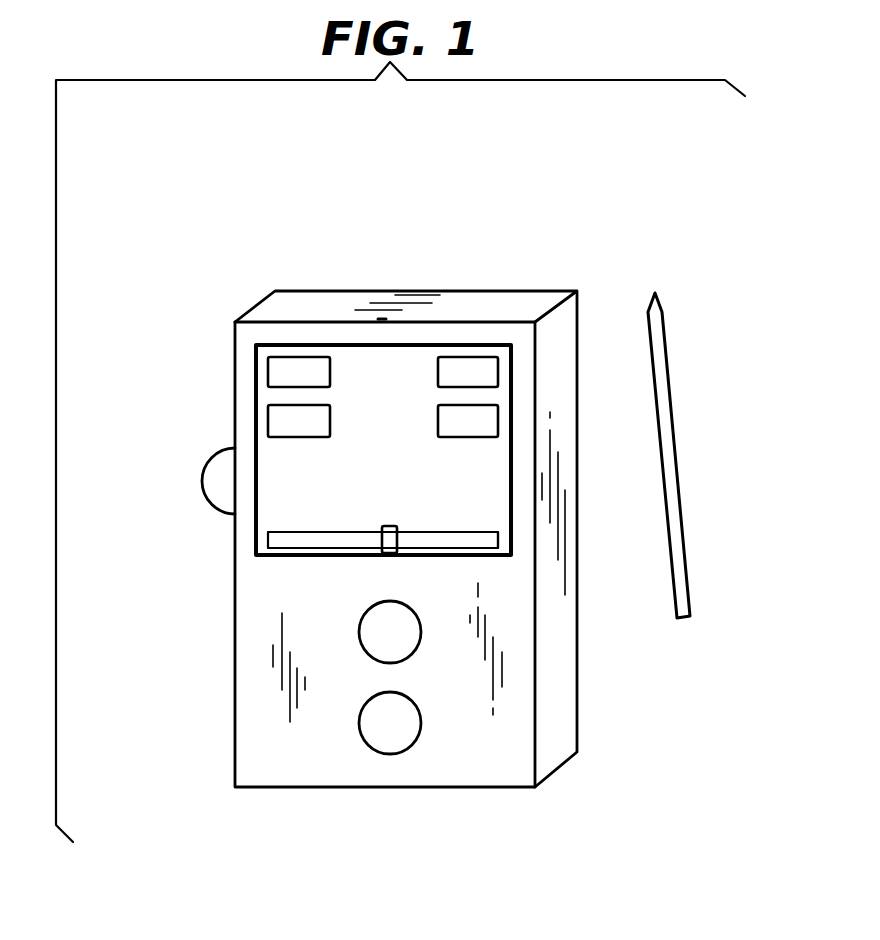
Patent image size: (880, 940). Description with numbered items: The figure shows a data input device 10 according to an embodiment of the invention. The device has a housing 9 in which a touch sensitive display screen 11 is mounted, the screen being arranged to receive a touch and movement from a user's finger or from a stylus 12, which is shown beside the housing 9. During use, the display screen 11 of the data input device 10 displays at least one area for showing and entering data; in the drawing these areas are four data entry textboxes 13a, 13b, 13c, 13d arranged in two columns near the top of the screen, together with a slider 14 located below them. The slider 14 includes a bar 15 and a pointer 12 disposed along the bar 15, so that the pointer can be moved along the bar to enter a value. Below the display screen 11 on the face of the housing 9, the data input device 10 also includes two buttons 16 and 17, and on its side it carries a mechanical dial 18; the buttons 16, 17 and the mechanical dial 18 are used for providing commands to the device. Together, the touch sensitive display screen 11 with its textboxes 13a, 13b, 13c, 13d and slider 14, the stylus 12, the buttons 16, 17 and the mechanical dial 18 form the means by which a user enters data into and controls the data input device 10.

The housing 9 is at (437, 287).
The data input device 10 is at (172, 288).
The touch sensitive display screen 11 is at (492, 342).
The stylus 12 is at (668, 372).
The data entry textbox 13a is at (268, 368).
The data entry textbox 13b is at (462, 357).
The data entry textbox 13c is at (268, 415).
The data entry textbox 13d is at (500, 420).
The slider 14 is at (250, 545).
The bar 15 is at (500, 540).
The button 16 is at (362, 620).
The button 17 is at (418, 736).
The mechanical dial 18 is at (203, 493).